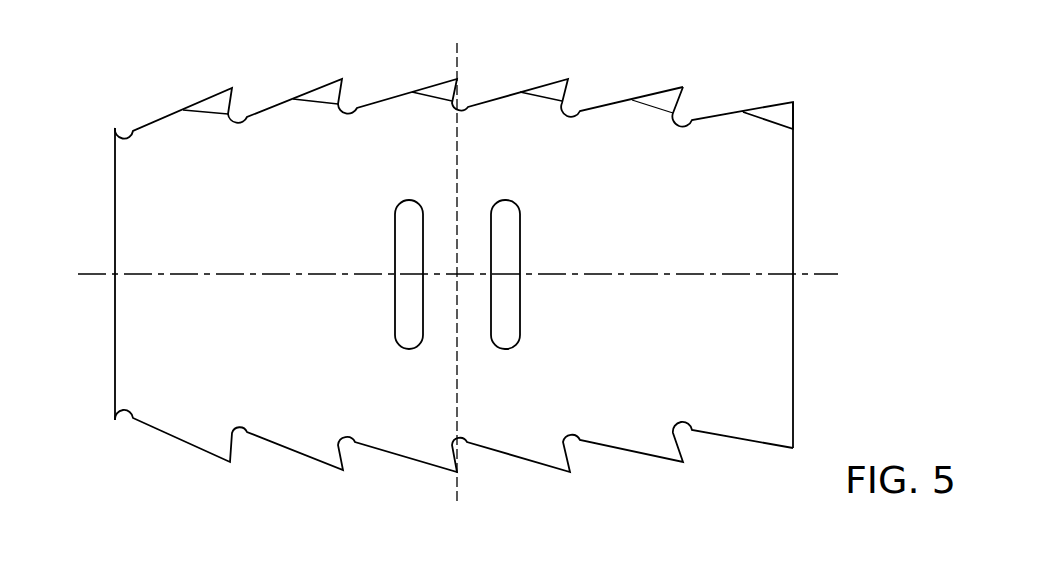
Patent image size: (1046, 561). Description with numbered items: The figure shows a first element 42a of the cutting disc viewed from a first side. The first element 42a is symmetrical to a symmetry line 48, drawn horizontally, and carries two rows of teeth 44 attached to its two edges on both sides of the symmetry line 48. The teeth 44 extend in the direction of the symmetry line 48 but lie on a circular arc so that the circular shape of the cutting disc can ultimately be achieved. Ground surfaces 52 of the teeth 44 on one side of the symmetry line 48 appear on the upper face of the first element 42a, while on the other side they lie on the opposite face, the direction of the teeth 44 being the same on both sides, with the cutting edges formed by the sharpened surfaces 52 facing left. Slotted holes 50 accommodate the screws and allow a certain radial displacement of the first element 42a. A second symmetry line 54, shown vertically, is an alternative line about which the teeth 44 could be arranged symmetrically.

The first element 42a is at (728, 322).
The teeth 44 is at (457, 79).
The symmetry line 48 is at (105, 274).
The slotted holes 50 is at (395, 293).
The ground surfaces 52 is at (683, 87).
The second symmetry line 54 is at (452, 52).